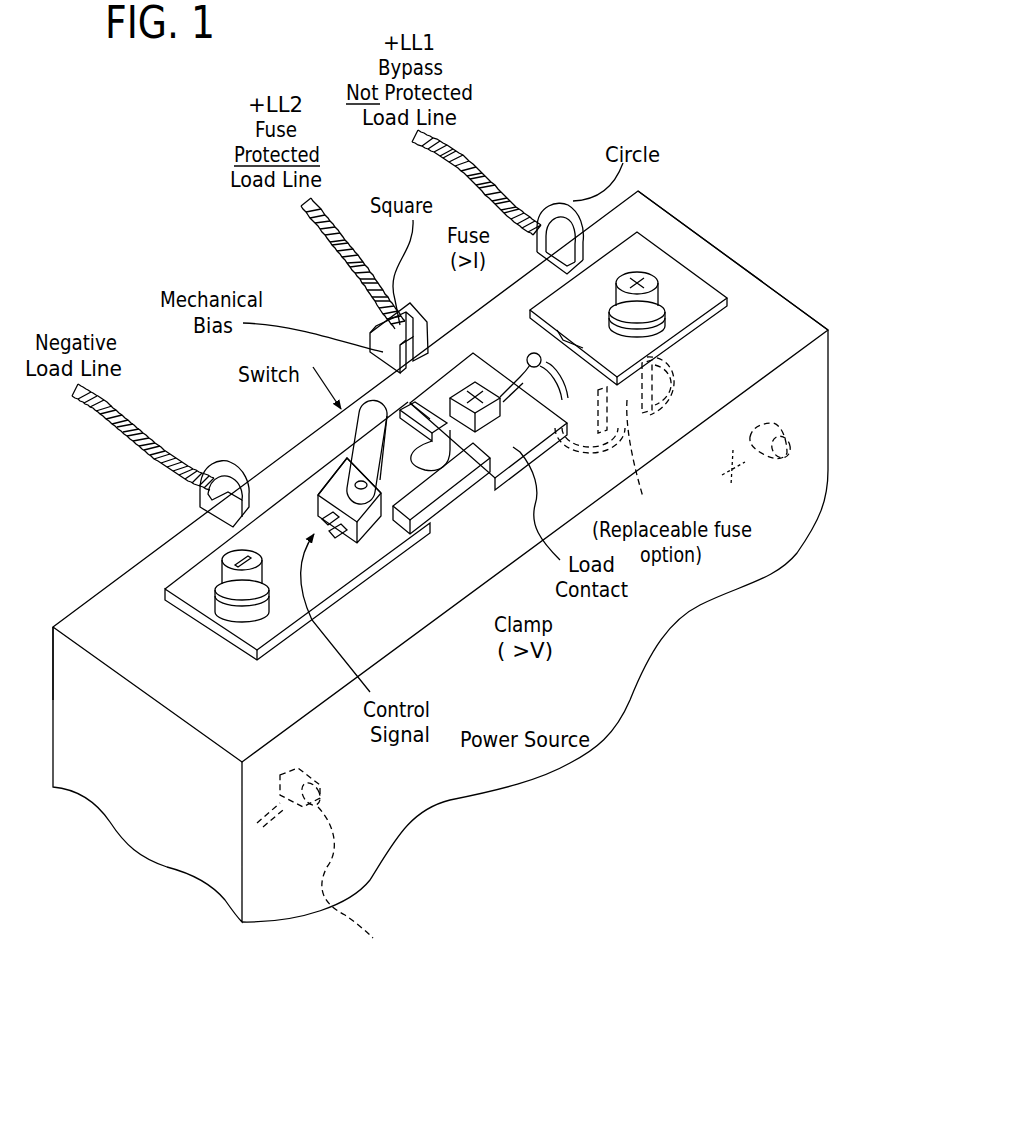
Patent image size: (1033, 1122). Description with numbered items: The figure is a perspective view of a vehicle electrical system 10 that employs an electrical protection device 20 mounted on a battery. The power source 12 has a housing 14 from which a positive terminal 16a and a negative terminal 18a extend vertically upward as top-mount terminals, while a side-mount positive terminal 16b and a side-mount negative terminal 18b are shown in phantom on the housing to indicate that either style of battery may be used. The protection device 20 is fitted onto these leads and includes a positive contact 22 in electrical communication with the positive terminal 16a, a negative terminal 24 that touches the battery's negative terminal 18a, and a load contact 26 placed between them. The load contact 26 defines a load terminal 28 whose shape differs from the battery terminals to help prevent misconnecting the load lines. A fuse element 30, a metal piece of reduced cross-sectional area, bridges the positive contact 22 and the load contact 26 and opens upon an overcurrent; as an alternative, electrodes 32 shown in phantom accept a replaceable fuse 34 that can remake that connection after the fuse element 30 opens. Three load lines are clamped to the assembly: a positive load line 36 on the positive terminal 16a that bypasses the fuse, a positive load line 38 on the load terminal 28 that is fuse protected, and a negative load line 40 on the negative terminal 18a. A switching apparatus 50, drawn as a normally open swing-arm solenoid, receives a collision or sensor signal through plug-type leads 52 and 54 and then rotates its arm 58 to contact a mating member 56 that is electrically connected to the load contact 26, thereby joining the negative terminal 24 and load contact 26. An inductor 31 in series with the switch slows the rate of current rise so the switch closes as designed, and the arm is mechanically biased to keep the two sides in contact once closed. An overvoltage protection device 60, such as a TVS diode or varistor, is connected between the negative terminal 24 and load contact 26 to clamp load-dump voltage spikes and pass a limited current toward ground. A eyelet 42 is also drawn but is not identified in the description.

The system 10 is at (752, 643).
The power source 12 is at (240, 763).
The housing 14 is at (398, 796).
The positive terminal 16a is at (658, 292).
The side mount positive terminal 16b is at (783, 432).
The negative terminal 18a is at (227, 572).
The side mount negative terminal 18b is at (332, 860).
The electrical protection device 20 is at (163, 586).
The positive contact 22 is at (581, 321).
The negative terminal 24 is at (295, 571).
The load contact 26 is at (524, 446).
The load terminal 28 is at (473, 380).
The fuse element 30 is at (531, 353).
The inductor 31 is at (411, 402).
The electrodes 32 is at (673, 370).
The replaceable fuse 34 is at (648, 459).
The positive load line 36 is at (563, 212).
The positive load line 38 is at (372, 345).
The negative load line 40 is at (197, 478).
The fuse lead eyelet 42 is at (563, 364).
The switching apparatus 50 is at (329, 476).
The lead 52 is at (318, 520).
The lead 54 is at (321, 541).
The mating member 56 is at (417, 456).
The arm 58 is at (349, 458).
The overvoltage protection device 60 is at (452, 490).